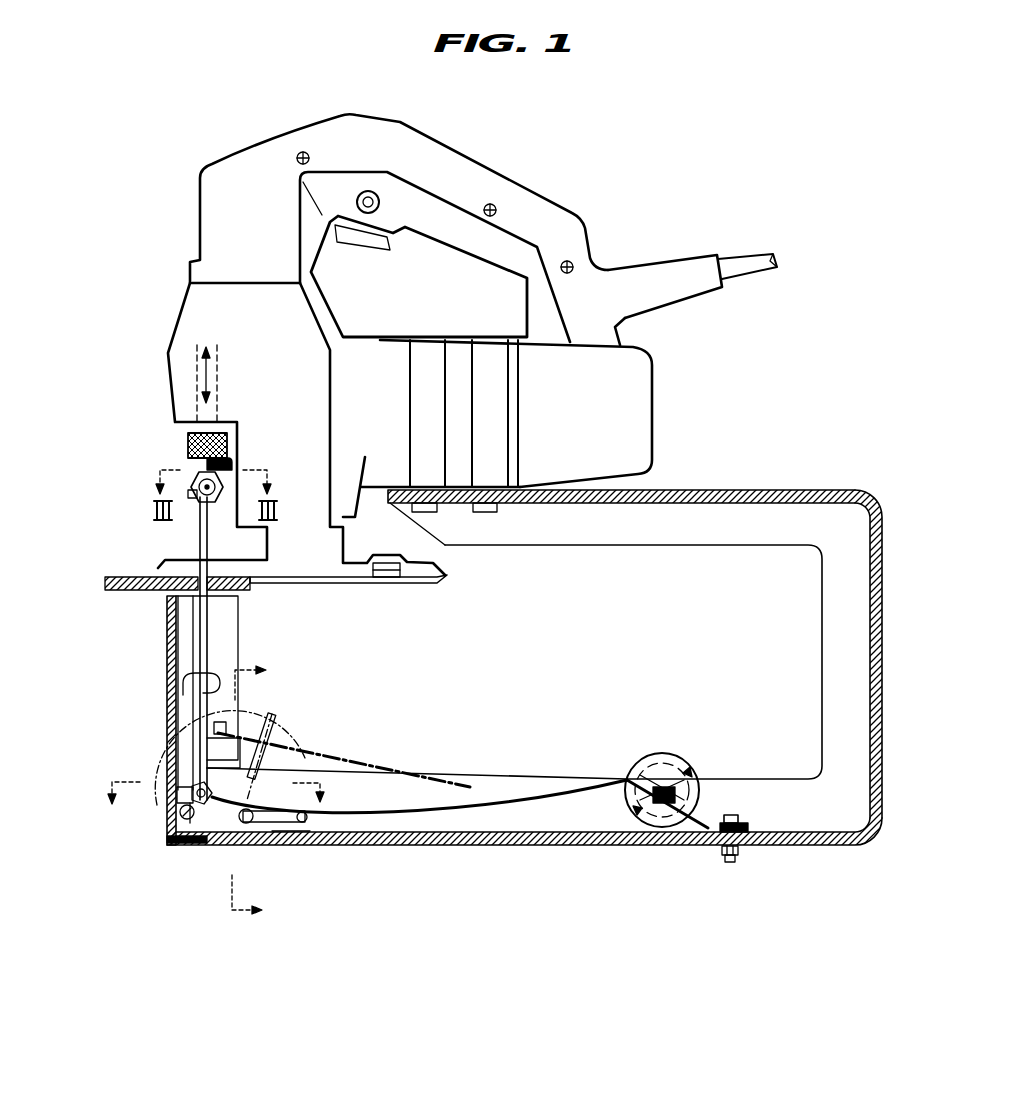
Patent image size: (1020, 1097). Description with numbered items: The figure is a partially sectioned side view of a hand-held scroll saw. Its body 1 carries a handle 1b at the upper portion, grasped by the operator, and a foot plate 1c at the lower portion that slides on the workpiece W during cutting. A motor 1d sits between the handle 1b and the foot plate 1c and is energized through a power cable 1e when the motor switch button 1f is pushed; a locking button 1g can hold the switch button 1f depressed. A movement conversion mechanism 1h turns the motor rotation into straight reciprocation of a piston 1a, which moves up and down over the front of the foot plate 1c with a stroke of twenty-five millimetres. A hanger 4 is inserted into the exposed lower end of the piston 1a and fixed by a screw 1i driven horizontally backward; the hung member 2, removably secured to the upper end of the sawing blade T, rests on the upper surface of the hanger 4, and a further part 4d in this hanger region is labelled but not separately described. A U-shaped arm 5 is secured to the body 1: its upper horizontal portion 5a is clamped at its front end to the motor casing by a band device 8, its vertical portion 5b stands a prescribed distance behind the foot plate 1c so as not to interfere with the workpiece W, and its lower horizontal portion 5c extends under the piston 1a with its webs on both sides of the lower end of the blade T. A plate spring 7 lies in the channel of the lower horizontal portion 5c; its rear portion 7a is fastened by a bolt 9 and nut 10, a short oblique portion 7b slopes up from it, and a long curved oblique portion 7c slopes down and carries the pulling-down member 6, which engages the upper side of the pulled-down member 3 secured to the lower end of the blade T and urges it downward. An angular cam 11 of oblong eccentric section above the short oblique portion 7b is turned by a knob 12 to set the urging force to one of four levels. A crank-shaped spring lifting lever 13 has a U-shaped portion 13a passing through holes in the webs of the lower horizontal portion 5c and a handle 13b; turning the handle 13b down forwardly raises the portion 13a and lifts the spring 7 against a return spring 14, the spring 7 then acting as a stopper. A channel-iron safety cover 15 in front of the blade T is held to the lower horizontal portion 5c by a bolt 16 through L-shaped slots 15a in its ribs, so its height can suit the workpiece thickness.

The body 1 is at (574, 214).
The piston 1a is at (197, 368).
The handle 1b is at (470, 178).
The foot plate 1c is at (332, 582).
The motor 1d is at (645, 394).
The power cable 1e is at (690, 288).
The motor switch button 1f is at (349, 238).
The locking button 1g is at (378, 196).
The movement conversion mechanism 1h is at (197, 303).
The screw 1i is at (190, 440).
The hung member 2 is at (197, 503).
The pulled-down member 3 is at (198, 825).
The hanger 4 is at (189, 487).
The clamp member 4d is at (205, 463).
The U-shaped arm 5 is at (748, 490).
The upper horizontal portion 5a is at (625, 547).
The vertical portion 5b is at (833, 525).
The lower horizontal portion 5c is at (478, 820).
The pulling-down member 6 is at (165, 790).
The plate spring 7 is at (490, 802).
The rear portion 7a is at (750, 826).
The short oblique portion 7b is at (700, 832).
The long oblique portion 7c is at (538, 792).
The band device 8 is at (482, 350).
The bolt 9 is at (734, 814).
The nut 10 is at (732, 864).
The angular cam 11 is at (693, 790).
The knob 12 is at (640, 782).
The spring lifting lever 13 is at (283, 718).
The U-shaped portion 13a is at (290, 836).
The handle 13b is at (268, 731).
The return spring 14 is at (259, 824).
The safety cover 15 is at (167, 645).
The L-shaped slots 15a is at (183, 688).
The bolt 16 is at (172, 842).
The workpiece W is at (103, 573).
The sawing blade T is at (195, 620).